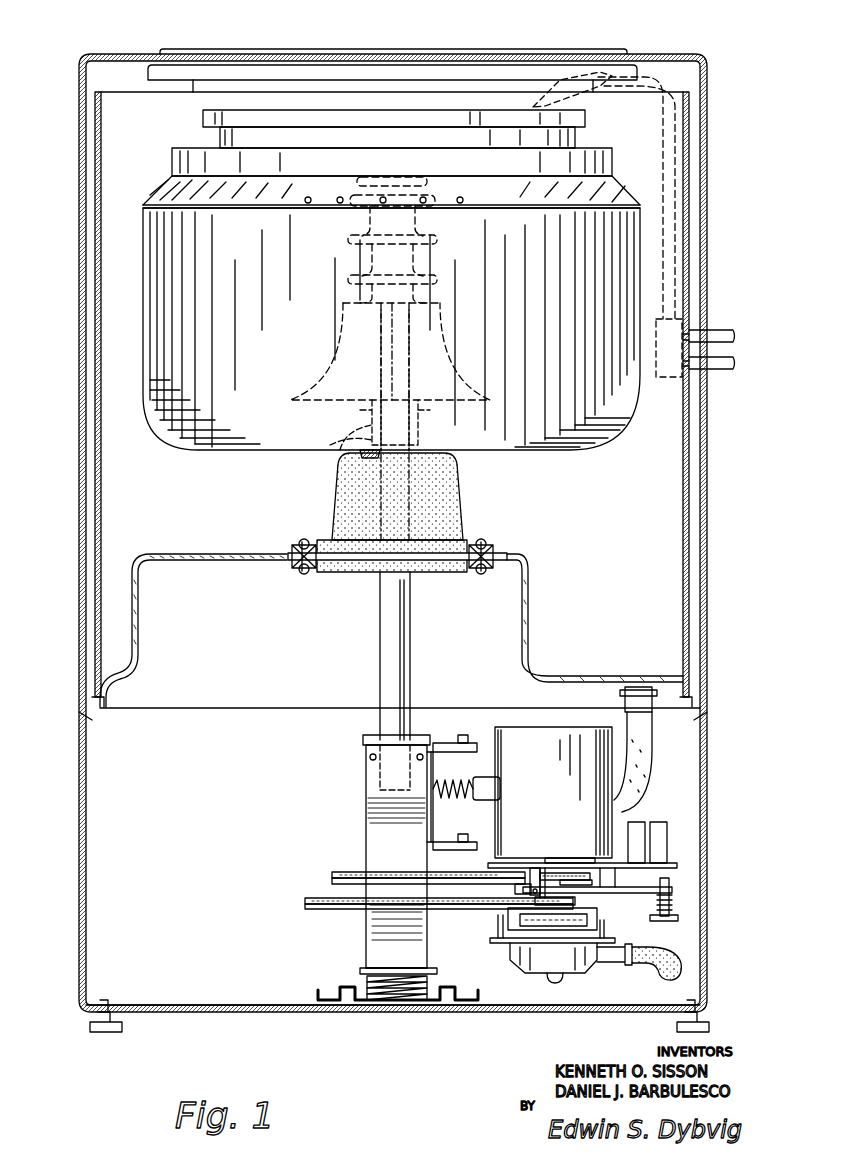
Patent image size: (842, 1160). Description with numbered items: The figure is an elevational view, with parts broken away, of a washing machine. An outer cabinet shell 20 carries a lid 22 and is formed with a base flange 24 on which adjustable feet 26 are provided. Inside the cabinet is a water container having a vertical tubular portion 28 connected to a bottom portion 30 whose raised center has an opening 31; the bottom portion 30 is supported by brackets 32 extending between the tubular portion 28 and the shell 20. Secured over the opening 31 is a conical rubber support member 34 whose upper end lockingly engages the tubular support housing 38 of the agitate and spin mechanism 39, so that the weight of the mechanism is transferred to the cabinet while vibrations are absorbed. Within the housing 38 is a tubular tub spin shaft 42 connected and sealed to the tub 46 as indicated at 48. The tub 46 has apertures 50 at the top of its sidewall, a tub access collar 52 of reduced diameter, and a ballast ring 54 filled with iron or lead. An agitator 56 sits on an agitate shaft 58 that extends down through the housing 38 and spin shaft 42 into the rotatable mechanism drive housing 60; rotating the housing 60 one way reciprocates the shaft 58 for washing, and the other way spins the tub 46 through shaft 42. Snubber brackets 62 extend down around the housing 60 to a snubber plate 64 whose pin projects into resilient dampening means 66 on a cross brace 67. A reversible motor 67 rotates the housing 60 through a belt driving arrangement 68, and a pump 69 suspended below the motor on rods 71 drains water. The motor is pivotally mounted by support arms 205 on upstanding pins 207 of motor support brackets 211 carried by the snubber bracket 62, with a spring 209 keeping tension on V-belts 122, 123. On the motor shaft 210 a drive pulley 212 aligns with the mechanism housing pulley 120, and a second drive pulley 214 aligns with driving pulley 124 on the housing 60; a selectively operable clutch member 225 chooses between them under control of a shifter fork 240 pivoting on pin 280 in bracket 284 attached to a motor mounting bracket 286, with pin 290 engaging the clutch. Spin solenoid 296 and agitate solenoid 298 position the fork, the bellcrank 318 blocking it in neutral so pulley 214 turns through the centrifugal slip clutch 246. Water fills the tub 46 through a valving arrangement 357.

The outer cabinet shell 20 is at (79, 312).
The lid 22 is at (185, 50).
The base flange 24 is at (168, 1006).
The adjustable feet 26 is at (105, 1038).
The vertical tubular portion 28 is at (101, 520).
The bottom portion 30 is at (138, 625).
The opening 31 is at (330, 572).
The brackets 32 is at (92, 722).
The conical rubber support member 34 is at (435, 500).
The tubular support housing 38 is at (403, 676).
The agitate and spin mechanism 39 is at (326, 800).
The tubular tub spin shaft 42 is at (435, 435).
The washing machine tub 46 is at (590, 451).
The tub connection 48 is at (365, 427).
The apertures 50 is at (338, 204).
The tub access collar 52 is at (220, 135).
The ballast ring 54 is at (200, 160).
The agitator 56 is at (445, 345).
The agitate shaft 58 is at (435, 337).
The mechanism drive housing 60 is at (366, 828).
The snubber brackets 62 is at (366, 752).
The snubber plate 64 is at (362, 971).
The resilient dampening means 66 is at (393, 990).
The reversible motor 67 is at (575, 745).
The belt driving arrangement 68 is at (478, 912).
The pump 69 is at (585, 960).
The rods 71 is at (496, 930).
The mechanism housing pulley 120 is at (340, 873).
The V-belt 122 is at (332, 881).
The V-belt 123 is at (305, 901).
The driving pulley 124 is at (320, 910).
The support arms 205 is at (487, 730).
The upstanding pins 207 is at (465, 735).
The spring 209 is at (446, 781).
The motor shaft 210 is at (556, 872).
The motor support brackets 211 is at (433, 745).
The drive pulley 212 is at (578, 879).
The second drive pulley 214 is at (542, 925).
The selectively operable clutch member 225 is at (570, 856).
The shifter fork 240 is at (675, 891).
The centrifugal slip clutch 246 is at (562, 978).
The pin 280 is at (522, 883).
The bracket 284 is at (543, 896).
The motor mounting bracket 286 is at (678, 865).
The pin 290 is at (535, 866).
The spin solenoid 296 is at (660, 830).
The agitate solenoid 298 is at (638, 825).
The bellcrank 318 is at (640, 921).
The valving arrangement 357 is at (668, 378).